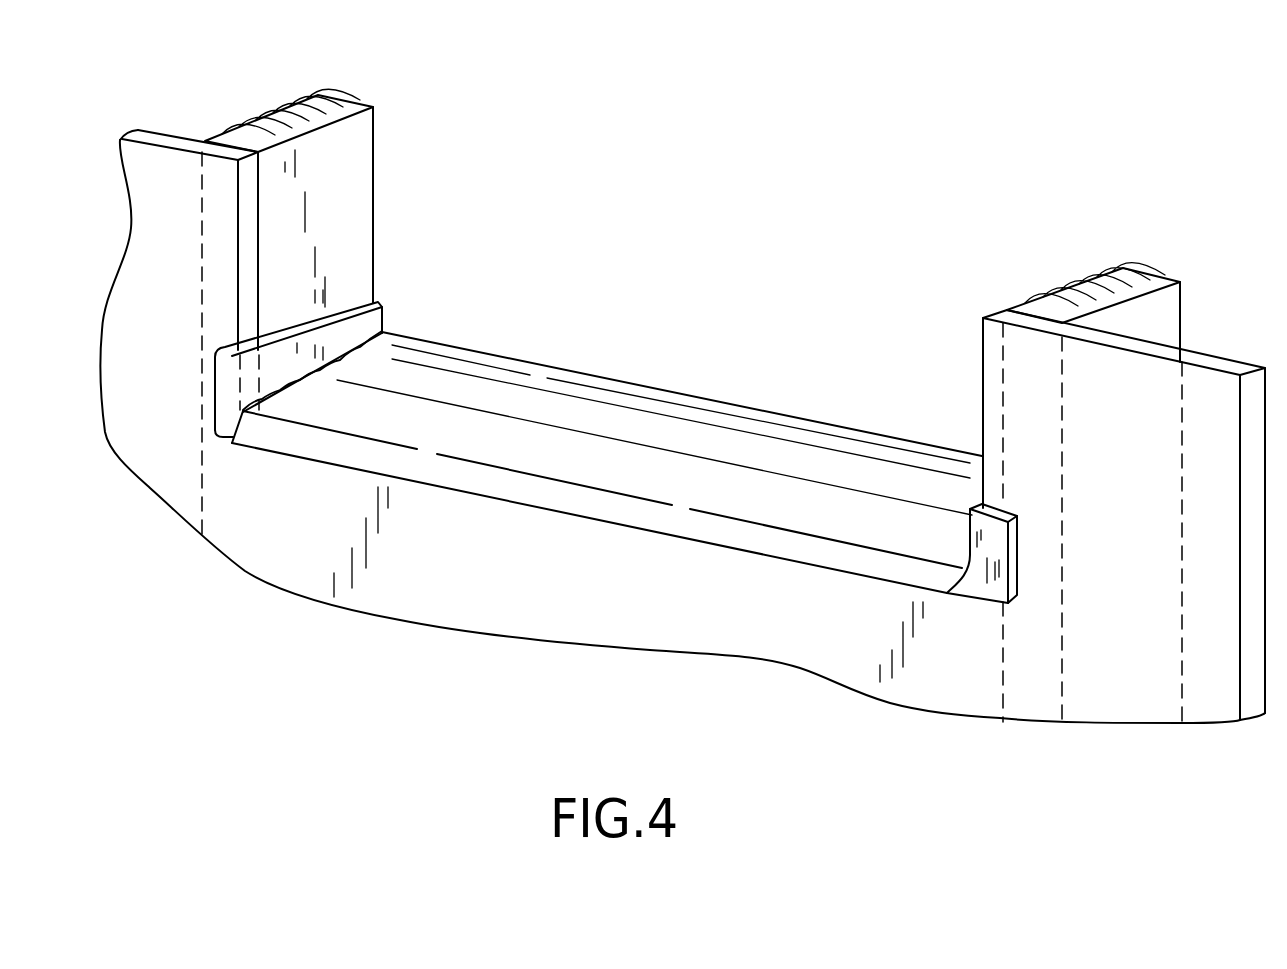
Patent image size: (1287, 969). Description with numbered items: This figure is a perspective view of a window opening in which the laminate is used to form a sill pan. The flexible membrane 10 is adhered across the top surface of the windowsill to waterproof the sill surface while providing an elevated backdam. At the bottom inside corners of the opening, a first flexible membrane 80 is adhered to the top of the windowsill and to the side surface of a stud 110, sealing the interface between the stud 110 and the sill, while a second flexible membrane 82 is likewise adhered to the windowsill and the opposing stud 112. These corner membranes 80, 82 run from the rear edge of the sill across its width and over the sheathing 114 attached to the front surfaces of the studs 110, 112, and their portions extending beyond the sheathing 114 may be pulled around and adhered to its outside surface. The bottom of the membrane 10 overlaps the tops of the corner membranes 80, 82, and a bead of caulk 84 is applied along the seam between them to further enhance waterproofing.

The flexible membrane 10 is at (600, 423).
The first flexible membrane 80 is at (348, 327).
The second flexible membrane 82 is at (993, 532).
The bead of caulk 84 is at (380, 328).
The stud 110 is at (342, 103).
The opposing stud 112 is at (1115, 288).
The sheathing 114 is at (148, 153).